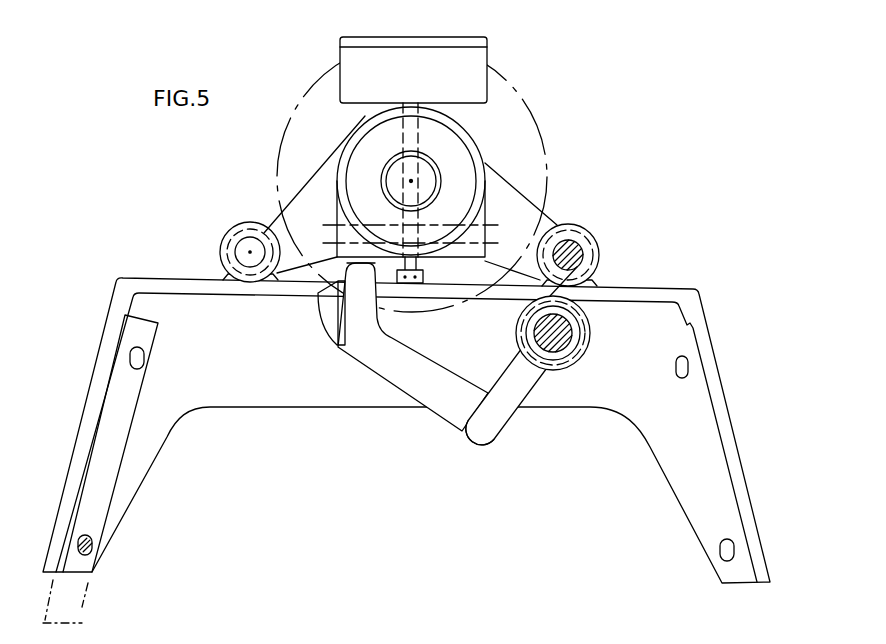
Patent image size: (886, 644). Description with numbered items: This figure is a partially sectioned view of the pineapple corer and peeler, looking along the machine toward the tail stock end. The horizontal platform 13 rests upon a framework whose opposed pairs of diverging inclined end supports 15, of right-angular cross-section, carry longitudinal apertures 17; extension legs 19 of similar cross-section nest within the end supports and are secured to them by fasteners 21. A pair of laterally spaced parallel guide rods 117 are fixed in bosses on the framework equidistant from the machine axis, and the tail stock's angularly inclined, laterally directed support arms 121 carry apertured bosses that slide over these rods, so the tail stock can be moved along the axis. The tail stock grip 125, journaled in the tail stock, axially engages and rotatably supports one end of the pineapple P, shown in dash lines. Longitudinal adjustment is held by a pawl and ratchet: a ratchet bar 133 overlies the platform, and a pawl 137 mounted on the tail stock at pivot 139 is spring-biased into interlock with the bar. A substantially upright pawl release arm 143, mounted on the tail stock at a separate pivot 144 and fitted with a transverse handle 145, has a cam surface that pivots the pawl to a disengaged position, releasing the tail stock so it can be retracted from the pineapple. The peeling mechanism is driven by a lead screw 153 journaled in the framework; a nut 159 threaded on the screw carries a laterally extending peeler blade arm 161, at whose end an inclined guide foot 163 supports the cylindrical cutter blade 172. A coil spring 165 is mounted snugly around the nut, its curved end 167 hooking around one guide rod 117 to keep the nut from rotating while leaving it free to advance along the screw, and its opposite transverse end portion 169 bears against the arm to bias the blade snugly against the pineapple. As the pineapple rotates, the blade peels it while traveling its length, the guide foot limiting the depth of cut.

The horizontal platform 13 is at (168, 278).
The inclined end supports 15 is at (106, 335).
The longitudinal apertures 17 is at (144, 365).
The extension legs 19 is at (82, 623).
The fasteners 21 is at (94, 546).
The pineapple P is at (522, 103).
The guide rods 117 is at (246, 247).
The support arms 121 is at (332, 155).
The tail stock grip 125 is at (484, 168).
The ratchet bar 133 is at (426, 278).
The pawl 137 is at (428, 200).
The pivot 139 is at (326, 247).
The pawl release arm 143 is at (417, 138).
The pivot 144 is at (328, 224).
The transverse handle 145 is at (440, 57).
The lead screw 153 is at (567, 340).
The nut 159 is at (578, 328).
The peeler blade arm 161 is at (391, 373).
The guide foot 163 is at (367, 306).
The coil spring 165 is at (573, 371).
The curved end 167 is at (586, 254).
The transverse end portion 169 is at (491, 441).
The cutter blade 172 is at (328, 318).